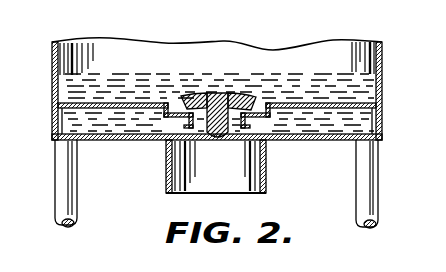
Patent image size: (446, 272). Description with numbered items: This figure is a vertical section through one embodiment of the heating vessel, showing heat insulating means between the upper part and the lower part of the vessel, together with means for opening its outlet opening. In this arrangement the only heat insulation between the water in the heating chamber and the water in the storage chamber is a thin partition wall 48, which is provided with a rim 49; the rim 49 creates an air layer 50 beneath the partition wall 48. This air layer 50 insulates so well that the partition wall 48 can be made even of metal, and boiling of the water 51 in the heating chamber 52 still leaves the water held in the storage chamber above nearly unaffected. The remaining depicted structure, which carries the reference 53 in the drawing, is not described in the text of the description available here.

The housing shell 53 is at (145, 52).
The partition wall 48 is at (152, 100).
The air layer 50 is at (323, 115).
The rim 49 is at (173, 122).
The heating chamber 52 is at (118, 111).
The water 51 is at (304, 129).